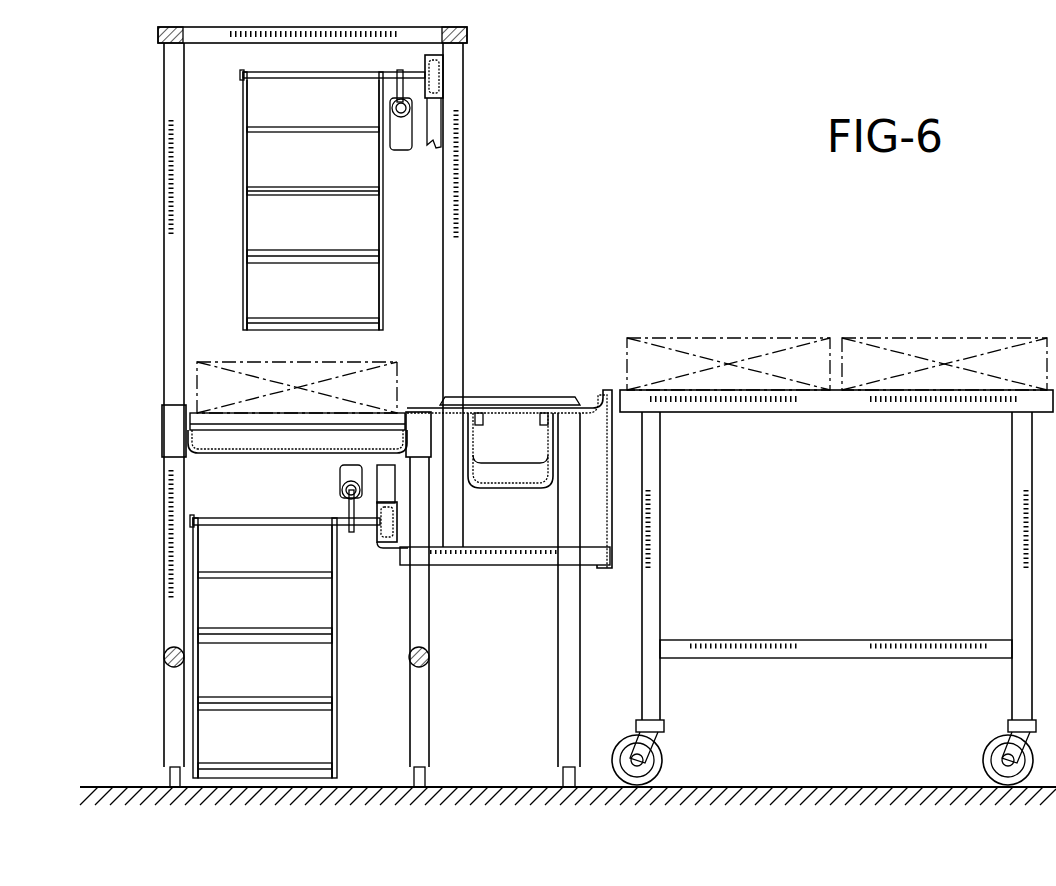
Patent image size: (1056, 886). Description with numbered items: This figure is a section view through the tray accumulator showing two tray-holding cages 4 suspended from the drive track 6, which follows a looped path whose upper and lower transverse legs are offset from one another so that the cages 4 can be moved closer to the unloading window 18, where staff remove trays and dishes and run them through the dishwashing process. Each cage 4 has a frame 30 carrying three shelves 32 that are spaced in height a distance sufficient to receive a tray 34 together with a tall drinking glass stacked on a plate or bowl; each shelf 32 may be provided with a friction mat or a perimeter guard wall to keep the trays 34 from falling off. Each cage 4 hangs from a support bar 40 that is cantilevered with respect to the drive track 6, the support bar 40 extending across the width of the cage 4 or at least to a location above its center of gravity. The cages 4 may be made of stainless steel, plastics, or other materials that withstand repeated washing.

The tray-holding cage 4 is at (392, 284).
The drive track 6 is at (424, 112).
The unloading window 18 is at (456, 337).
The frame 30 is at (384, 226).
The shelf 32 is at (325, 200).
The tray 34 is at (312, 188).
The support bar 40 is at (335, 82).